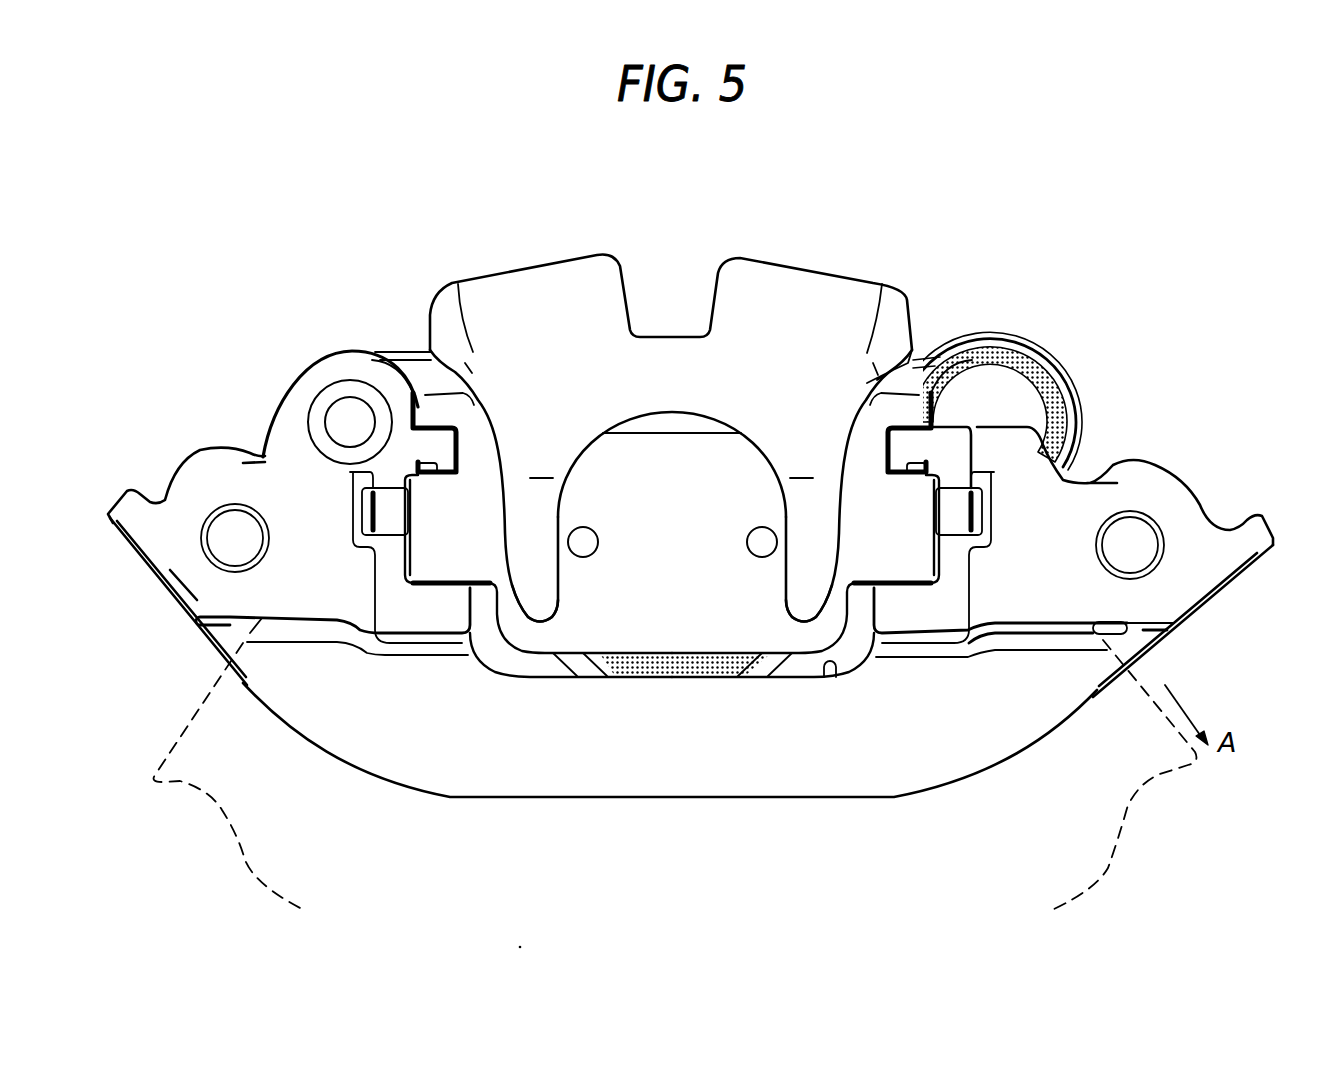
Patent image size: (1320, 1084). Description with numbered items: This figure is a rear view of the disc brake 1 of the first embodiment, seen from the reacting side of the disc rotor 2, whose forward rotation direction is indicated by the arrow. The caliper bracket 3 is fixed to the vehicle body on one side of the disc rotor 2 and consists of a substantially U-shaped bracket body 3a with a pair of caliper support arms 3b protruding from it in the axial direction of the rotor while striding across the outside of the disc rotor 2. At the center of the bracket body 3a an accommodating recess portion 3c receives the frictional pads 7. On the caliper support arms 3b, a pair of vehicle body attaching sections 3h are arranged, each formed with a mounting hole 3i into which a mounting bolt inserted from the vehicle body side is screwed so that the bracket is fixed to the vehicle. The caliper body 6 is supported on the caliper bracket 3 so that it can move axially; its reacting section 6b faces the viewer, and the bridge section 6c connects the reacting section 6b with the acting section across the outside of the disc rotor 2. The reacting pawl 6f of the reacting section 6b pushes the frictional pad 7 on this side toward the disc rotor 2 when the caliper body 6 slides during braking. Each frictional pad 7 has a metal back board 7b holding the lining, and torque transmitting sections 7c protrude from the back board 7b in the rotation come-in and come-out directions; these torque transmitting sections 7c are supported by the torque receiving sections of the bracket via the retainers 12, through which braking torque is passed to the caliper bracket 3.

The disc brake 1 is at (945, 208).
The disc rotor 2 is at (205, 730).
The caliper bracket 3 is at (650, 800).
The bracket body 3a is at (795, 783).
The caliper support arm 3b is at (355, 370).
The accommodating recess portion 3c is at (830, 677).
The vehicle body attaching section 3h is at (196, 478).
The mounting hole 3i is at (262, 558).
The caliper body 6 is at (532, 255).
The reacting section 6b is at (595, 423).
The bridge section 6c is at (797, 280).
The reacting pawl 6f is at (553, 588).
The frictional pad 7 is at (543, 657).
The back board 7b is at (660, 632).
The torque transmitting section 7c is at (447, 560).
The retainer 12 is at (383, 517).